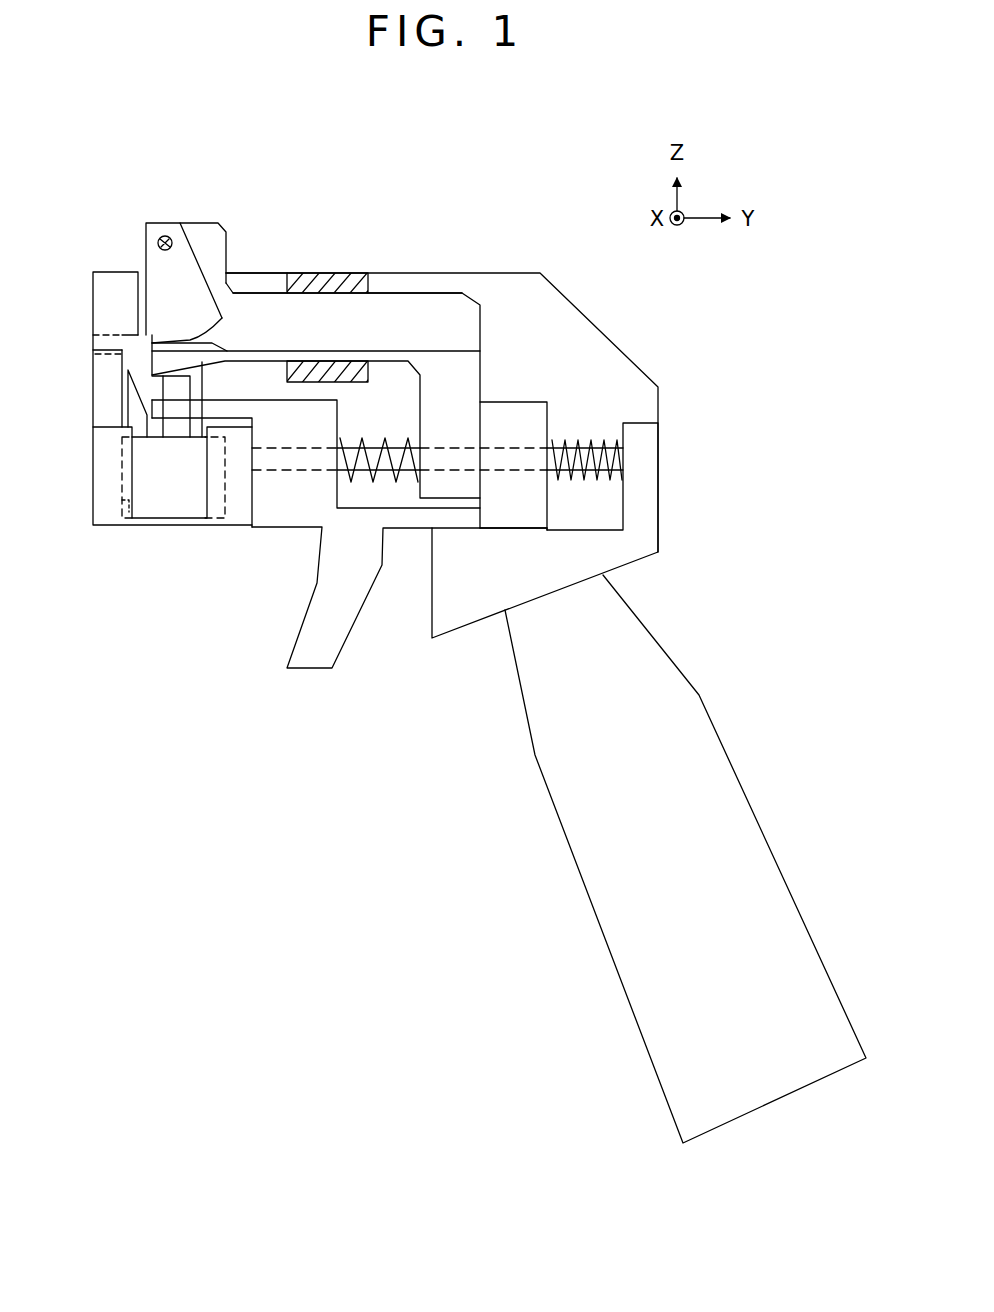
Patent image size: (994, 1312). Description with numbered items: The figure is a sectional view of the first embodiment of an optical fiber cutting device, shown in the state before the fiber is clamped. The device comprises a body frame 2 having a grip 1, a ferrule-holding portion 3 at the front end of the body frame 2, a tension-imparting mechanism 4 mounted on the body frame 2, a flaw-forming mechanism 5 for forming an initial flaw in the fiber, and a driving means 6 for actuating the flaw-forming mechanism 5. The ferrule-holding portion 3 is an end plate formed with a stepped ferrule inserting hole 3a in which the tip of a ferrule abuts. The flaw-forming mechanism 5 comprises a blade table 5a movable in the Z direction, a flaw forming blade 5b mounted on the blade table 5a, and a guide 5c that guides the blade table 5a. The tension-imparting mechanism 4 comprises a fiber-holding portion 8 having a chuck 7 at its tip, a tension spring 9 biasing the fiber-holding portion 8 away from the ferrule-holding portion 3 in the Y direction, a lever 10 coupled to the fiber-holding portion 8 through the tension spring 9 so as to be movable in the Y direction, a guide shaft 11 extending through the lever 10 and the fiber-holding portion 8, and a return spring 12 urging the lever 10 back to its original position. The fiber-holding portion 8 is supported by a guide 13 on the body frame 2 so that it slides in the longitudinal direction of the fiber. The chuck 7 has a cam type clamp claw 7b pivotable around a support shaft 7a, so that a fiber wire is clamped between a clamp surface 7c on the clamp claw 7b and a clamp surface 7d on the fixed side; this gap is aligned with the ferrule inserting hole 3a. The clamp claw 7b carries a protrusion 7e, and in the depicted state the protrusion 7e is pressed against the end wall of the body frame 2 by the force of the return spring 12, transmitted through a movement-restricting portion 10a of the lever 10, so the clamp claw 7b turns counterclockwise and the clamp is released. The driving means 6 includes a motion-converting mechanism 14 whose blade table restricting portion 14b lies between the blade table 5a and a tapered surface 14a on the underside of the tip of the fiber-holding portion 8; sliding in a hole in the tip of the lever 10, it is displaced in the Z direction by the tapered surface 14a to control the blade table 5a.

The grip 1 is at (553, 775).
The body frame 2 is at (573, 325).
The ferrule-holding portion 3 is at (90, 345).
The ferrule inserting hole 3a is at (92, 333).
The tension-imparting mechanism 4 is at (265, 281).
The flaw-forming mechanism 5 is at (118, 450).
The blade table 5a is at (150, 478).
The flaw forming blade 5b is at (128, 402).
The guide 5c is at (120, 522).
The driving means 6 is at (166, 595).
The chuck 7 is at (163, 221).
The support shaft 7a is at (158, 241).
The clamp claw 7b is at (157, 262).
The clamp surface 7c is at (222, 322).
The clamp surface 7d is at (203, 343).
The protrusion 7e is at (143, 325).
The fiber-holding portion 8 is at (420, 310).
The tension spring 9 is at (363, 445).
The lever 10 is at (313, 624).
The movement-restricting portion 10a is at (510, 425).
The guide shaft 11 is at (612, 455).
The return spring 12 is at (557, 445).
The guide 13 is at (330, 283).
The motion-converting mechanism 14 is at (205, 438).
The tapered surface 14a is at (200, 430).
The blade table restricting portion 14b is at (177, 425).